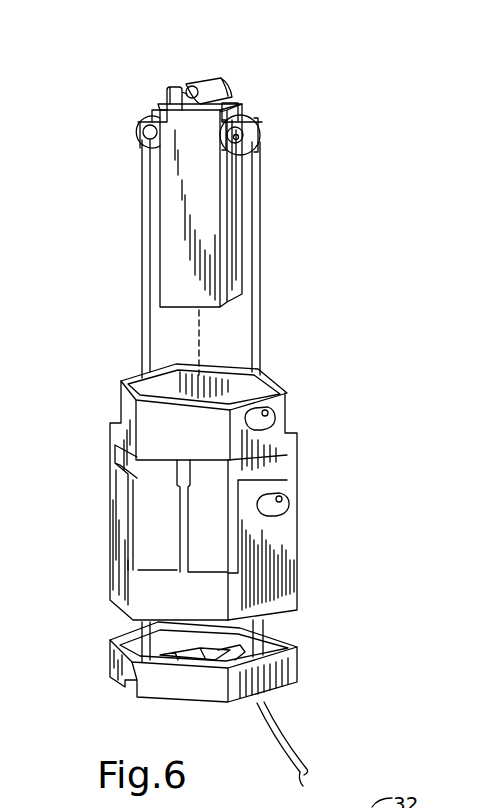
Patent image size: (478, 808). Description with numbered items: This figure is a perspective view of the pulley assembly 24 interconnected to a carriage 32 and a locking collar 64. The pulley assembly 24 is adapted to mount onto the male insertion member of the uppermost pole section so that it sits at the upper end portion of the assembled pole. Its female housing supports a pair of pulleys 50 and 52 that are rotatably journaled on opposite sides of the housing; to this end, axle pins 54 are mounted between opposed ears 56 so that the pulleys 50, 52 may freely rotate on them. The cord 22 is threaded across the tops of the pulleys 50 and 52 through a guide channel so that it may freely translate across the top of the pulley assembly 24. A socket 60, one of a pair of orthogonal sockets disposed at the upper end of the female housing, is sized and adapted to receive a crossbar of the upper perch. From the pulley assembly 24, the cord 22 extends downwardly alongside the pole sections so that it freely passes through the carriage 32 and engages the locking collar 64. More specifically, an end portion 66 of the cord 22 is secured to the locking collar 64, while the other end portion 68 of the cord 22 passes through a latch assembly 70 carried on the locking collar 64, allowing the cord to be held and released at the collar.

The cord 22 is at (145, 343).
The pulley assembly 24 is at (203, 214).
The carriage 32 is at (118, 528).
The pulley 50 is at (142, 120).
The pulley 52 is at (260, 117).
The axle pin 54 is at (260, 150).
The ear 56 is at (143, 129).
The socket 60 is at (200, 73).
The locking collar 64 is at (148, 143).
The end portion 66 is at (135, 632).
The end portion 68 is at (278, 733).
The latch assembly 70 is at (278, 644).